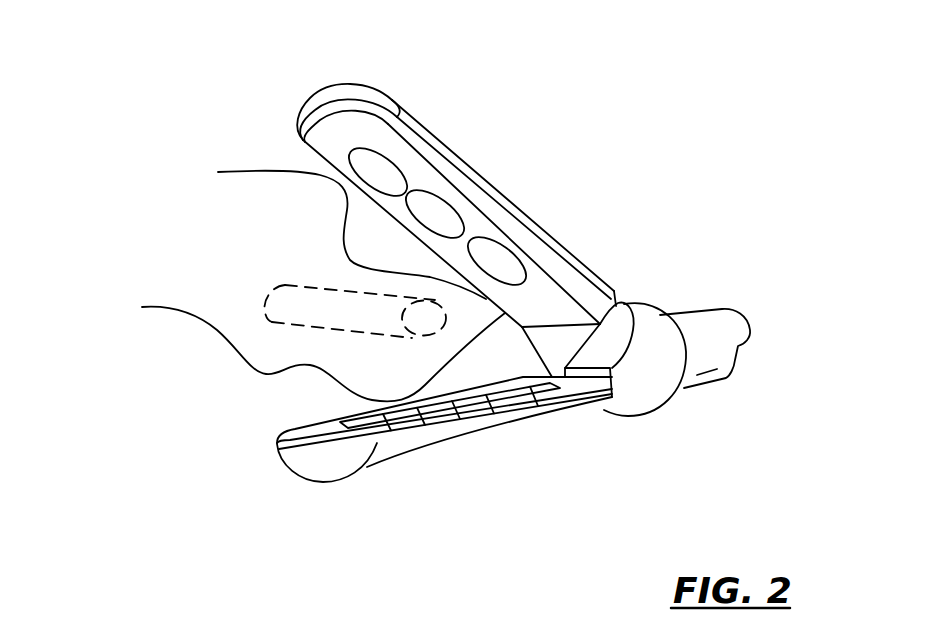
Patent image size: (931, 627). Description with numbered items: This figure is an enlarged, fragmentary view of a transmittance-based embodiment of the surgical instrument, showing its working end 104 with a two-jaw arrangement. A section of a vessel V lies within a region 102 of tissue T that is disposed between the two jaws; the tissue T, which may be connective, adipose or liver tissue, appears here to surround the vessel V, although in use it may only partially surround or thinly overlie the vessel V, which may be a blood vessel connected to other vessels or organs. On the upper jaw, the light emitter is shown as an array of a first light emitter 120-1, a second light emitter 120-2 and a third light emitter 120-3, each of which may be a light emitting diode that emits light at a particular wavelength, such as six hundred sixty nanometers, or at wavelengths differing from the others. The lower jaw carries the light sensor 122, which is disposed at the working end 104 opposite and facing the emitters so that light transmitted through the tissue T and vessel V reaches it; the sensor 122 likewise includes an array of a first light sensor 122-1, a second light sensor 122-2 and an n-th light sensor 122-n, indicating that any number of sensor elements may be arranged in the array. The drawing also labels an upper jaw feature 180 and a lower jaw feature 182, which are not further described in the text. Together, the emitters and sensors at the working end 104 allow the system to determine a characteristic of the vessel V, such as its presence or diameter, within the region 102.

The working end 104 is at (668, 238).
The upper jaw pad 180 is at (368, 92).
The first light emitter 120-1 is at (384, 170).
The second light emitter 120-2 is at (441, 216).
The third light emitter 120-3 is at (503, 258).
The lower jaw pad 182 is at (318, 472).
The light sensor 122 is at (562, 394).
The first light sensor 122-1 is at (384, 418).
The second light sensor 122-2 is at (412, 412).
The n-th light sensor 122-n is at (458, 403).
The region of tissue 102 is at (280, 371).
The tissue T is at (311, 207).
The vessel V is at (275, 297).